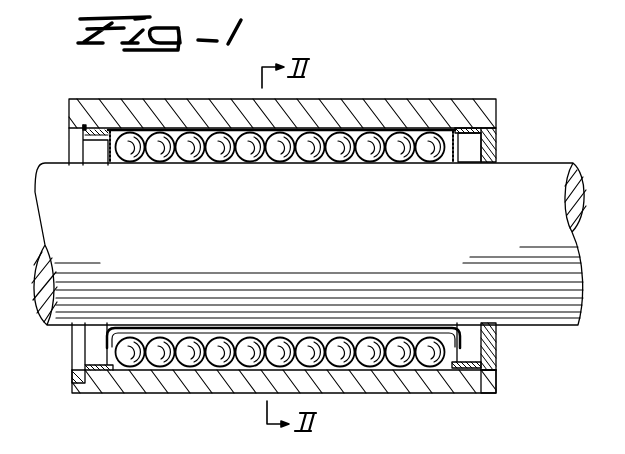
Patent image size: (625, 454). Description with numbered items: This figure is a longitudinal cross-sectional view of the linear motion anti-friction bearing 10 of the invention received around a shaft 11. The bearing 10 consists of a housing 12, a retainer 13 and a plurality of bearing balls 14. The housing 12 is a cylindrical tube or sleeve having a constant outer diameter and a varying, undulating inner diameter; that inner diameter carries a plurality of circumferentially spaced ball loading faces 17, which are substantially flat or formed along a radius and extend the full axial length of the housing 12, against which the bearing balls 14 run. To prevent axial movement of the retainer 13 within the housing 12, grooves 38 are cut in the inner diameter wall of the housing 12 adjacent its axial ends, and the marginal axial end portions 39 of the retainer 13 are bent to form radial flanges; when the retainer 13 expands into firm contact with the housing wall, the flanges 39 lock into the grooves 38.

The linear motion anti-friction bearing 10 is at (499, 98).
The shaft 11 is at (532, 177).
The housing 12 is at (425, 108).
The retainer 13 is at (473, 144).
The bearing balls 14 is at (280, 150).
The ball loading faces 17 is at (343, 150).
The grooves 38 is at (83, 381).
The marginal axial end portions (radial flanges) 39 is at (500, 371).